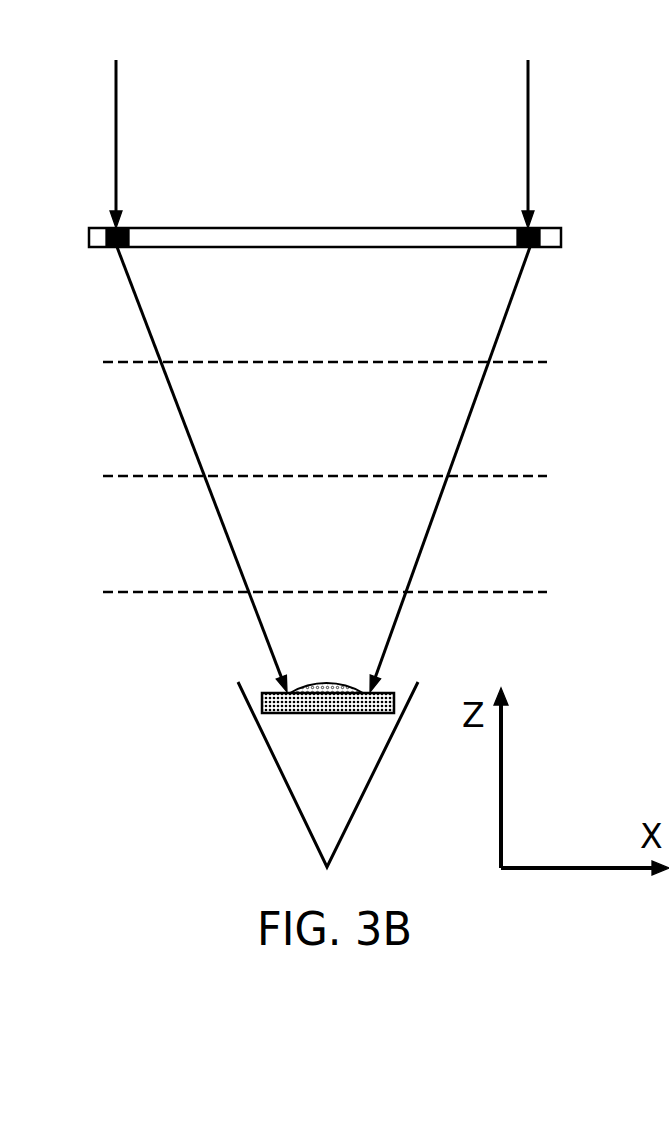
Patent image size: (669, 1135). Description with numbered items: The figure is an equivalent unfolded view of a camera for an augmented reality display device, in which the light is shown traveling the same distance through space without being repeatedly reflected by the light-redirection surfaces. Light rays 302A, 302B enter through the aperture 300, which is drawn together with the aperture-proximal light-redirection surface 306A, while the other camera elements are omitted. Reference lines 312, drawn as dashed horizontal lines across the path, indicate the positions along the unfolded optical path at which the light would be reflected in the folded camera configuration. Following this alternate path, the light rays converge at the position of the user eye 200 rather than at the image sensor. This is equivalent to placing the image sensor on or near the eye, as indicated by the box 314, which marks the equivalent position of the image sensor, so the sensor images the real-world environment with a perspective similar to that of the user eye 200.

The user eye 200 is at (288, 792).
The aperture 300 is at (106, 228).
The light ray 302A is at (116, 138).
The light ray 302B is at (528, 128).
The aperture-proximal light-redirection surface 306A is at (222, 228).
The reference lines 312 is at (520, 592).
The box 314 is at (267, 680).